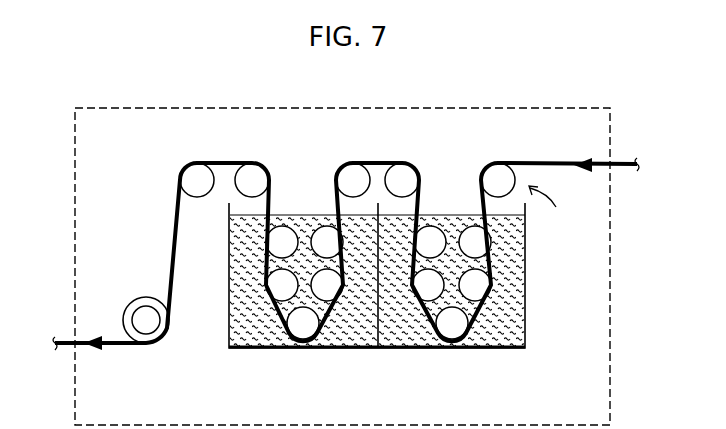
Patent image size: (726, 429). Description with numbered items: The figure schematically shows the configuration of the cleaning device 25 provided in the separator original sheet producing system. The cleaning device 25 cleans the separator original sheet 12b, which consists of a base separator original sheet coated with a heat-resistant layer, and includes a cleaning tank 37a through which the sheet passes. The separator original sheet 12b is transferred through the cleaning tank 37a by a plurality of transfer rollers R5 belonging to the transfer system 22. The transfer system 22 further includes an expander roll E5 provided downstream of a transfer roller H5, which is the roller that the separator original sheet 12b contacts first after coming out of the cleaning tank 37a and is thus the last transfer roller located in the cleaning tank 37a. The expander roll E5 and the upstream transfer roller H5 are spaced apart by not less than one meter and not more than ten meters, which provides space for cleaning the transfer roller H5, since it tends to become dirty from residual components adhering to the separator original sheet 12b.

The cleaning device 25 is at (574, 105).
The separator original sheet 12b is at (550, 160).
The transfer system 22 is at (555, 201).
The cleaning tank 37a is at (396, 359).
The transfer rollers R5 is at (200, 163).
The transfer roller H5 is at (258, 163).
The expander roll E5 is at (149, 298).